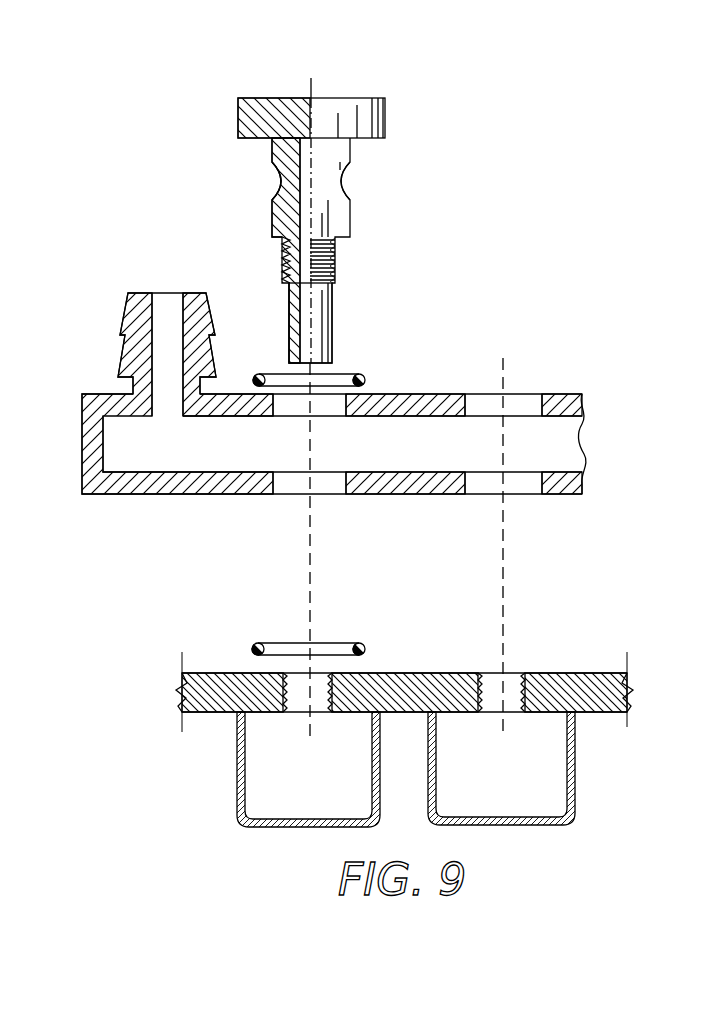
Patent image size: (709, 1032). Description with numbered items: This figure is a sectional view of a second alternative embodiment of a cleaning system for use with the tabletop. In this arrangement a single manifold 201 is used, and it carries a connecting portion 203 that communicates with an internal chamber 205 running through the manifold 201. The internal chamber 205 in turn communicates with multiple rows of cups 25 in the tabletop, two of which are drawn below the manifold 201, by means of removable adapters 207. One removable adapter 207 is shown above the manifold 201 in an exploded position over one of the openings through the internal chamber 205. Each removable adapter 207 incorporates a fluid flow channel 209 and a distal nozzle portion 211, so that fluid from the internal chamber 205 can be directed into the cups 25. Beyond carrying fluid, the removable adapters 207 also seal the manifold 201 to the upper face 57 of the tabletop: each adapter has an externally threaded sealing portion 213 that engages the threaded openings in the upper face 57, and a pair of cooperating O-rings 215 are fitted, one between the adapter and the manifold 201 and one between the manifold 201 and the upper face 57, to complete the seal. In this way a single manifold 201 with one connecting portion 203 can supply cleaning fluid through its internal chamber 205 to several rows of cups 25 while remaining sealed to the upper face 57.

The removable adapter 207 is at (460, 90).
The fluid flow channel 209 is at (287, 189).
The externally threaded sealing portion 213 is at (336, 260).
The distal nozzle portion 211 is at (330, 322).
The O-ring 215 is at (362, 378).
The manifold 201 is at (480, 366).
The internal chamber 205 is at (548, 446).
The connecting portion 203 is at (126, 304).
The upper face 57 is at (566, 672).
The cup 25 is at (237, 770).